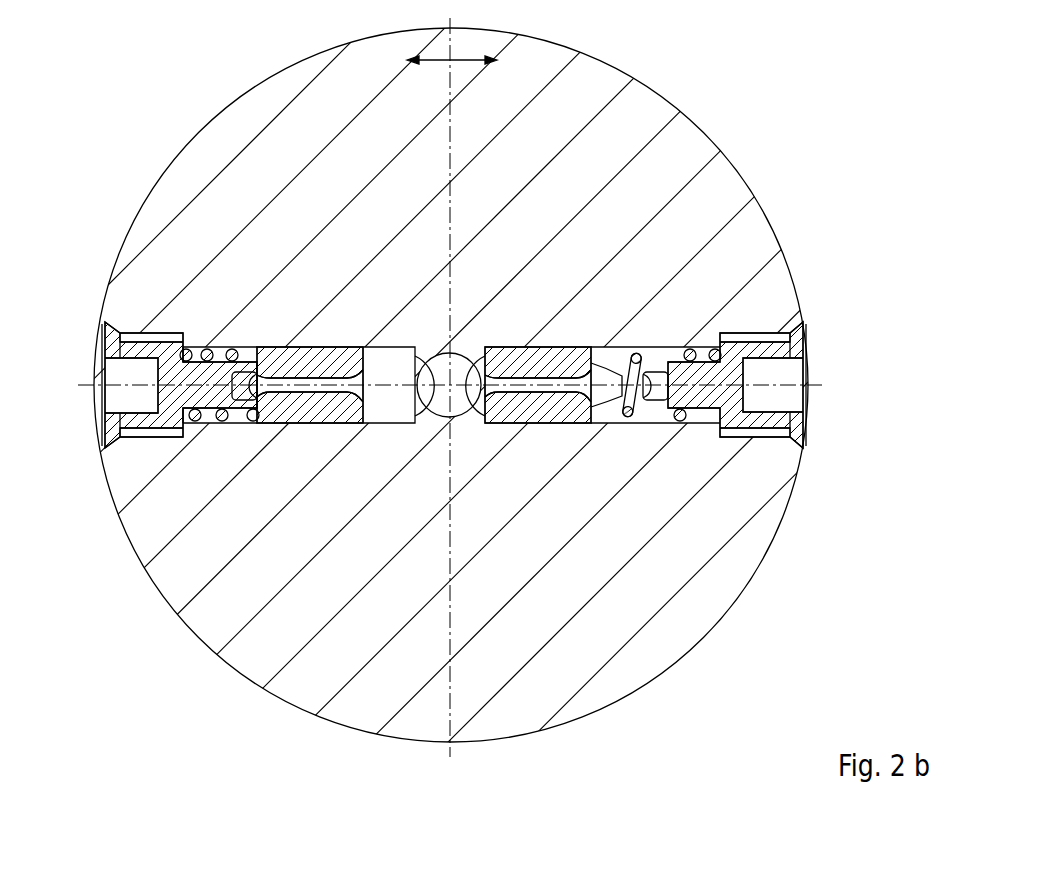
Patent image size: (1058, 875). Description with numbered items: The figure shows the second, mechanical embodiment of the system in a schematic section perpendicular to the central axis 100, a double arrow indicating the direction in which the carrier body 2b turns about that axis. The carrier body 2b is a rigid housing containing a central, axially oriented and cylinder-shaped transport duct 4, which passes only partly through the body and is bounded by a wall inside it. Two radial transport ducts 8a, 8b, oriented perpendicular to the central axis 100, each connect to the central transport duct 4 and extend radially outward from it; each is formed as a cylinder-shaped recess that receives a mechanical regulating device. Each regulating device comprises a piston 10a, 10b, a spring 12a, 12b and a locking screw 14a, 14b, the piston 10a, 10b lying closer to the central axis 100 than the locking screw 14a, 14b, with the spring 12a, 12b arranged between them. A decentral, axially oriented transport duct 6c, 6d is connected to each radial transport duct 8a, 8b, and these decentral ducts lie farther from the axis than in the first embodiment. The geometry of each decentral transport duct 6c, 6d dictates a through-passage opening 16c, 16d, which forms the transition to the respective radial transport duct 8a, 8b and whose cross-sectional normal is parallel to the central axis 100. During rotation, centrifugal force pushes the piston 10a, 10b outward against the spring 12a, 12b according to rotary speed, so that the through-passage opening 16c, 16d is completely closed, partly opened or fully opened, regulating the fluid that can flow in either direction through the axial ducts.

The carrier body 2b is at (712, 138).
The central transport duct 4 is at (466, 418).
The decentral axial transport duct 6c is at (255, 346).
The through-passage opening 16c is at (272, 349).
The decentral axial transport duct 6d is at (607, 375).
The through-passage opening 16d is at (629, 354).
The radial transport duct 8a is at (217, 424).
The radial transport duct 8b is at (610, 424).
The piston 10a is at (298, 424).
The piston 10b is at (535, 424).
The spring 12a is at (203, 346).
The spring 12b is at (683, 424).
The locking screw 14a is at (103, 345).
The locking screw 14b is at (806, 345).
The central axis 100 is at (420, 410).